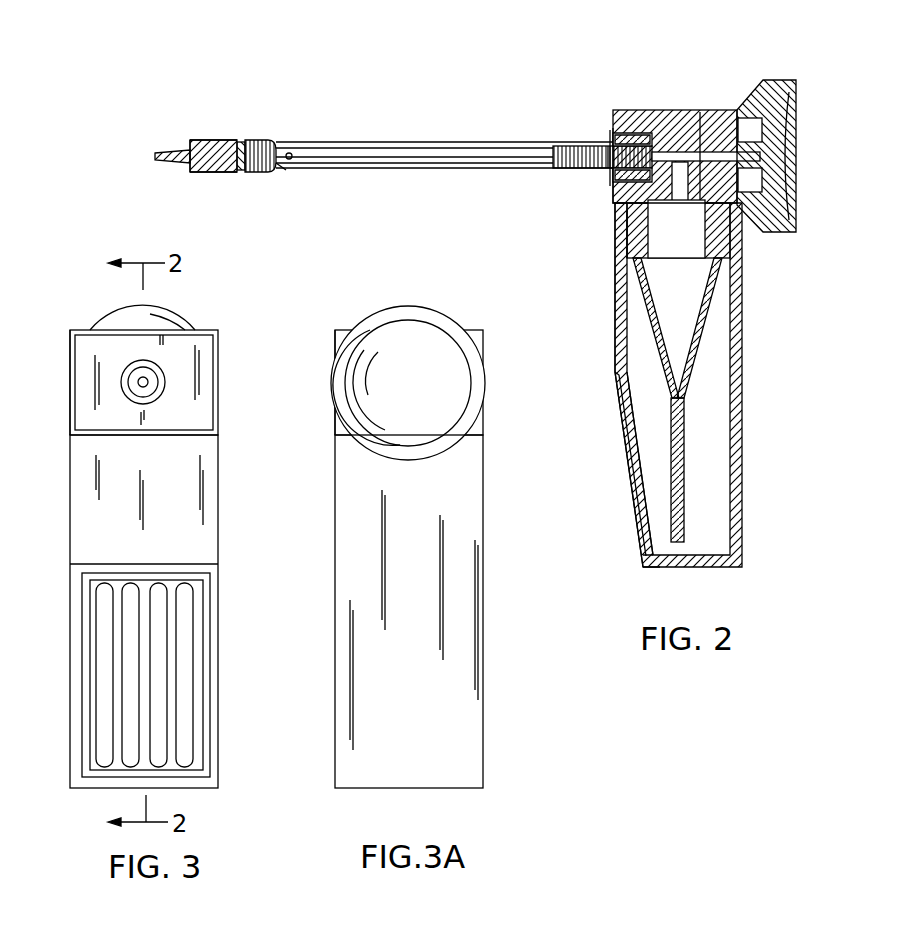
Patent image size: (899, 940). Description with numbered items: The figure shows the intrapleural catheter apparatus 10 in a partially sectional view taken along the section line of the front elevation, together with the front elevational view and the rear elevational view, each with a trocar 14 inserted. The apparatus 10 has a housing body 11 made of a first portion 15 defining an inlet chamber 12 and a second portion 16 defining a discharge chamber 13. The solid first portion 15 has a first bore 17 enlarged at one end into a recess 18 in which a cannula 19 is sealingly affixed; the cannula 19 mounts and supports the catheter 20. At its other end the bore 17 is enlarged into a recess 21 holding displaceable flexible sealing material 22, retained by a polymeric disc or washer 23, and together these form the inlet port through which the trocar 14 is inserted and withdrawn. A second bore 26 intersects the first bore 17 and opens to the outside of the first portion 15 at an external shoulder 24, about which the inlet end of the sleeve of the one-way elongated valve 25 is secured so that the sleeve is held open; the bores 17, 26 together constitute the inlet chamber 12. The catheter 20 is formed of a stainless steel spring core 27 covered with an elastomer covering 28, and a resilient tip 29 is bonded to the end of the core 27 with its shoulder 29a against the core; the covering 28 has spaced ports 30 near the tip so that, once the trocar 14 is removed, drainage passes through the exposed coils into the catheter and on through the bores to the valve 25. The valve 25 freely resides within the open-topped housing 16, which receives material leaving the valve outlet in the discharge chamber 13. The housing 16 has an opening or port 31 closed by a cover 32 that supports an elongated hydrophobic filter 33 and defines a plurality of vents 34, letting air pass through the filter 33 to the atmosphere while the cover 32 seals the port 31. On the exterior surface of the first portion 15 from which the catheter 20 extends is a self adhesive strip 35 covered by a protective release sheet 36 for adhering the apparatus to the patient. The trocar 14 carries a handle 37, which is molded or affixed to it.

In FIG. 2, the intrapleural catheter apparatus 10 is at (614, 288).
In FIG. 3, the intrapleural catheter apparatus 10 is at (218, 349).
In FIG. 3A, the intrapleural catheter apparatus 10 is at (342, 330).
In FIG. 2, the housing body 11 is at (616, 252).
In FIG. 2, the inlet chamber 12 is at (613, 205).
In FIG. 2, the discharge chamber 13 is at (716, 456).
In FIG. 2, the trocar 14 is at (165, 152).
In FIG. 3, the trocar 14 is at (143, 388).
In FIG. 2, the first portion of housing body 15 is at (658, 110).
In FIG. 3, the first portion of housing body 15 is at (218, 392).
In FIG. 3A, the first portion of housing body 15 is at (333, 357).
In FIG. 2, the second portion of housing body 16 is at (742, 330).
In FIG. 3, the second portion of housing body 16 is at (218, 512).
In FIG. 3A, the second portion of housing body 16 is at (335, 596).
In FIG. 2, the first bore 17 is at (681, 112).
In FIG. 2, the recess 18 is at (638, 110).
In FIG. 2, the cannula 19 is at (613, 140).
In FIG. 3, the cannula 19 is at (126, 372).
In FIG. 2, the catheter 20 is at (380, 142).
In FIG. 2, the recess 21 is at (710, 110).
In FIG. 2, the sealing material 22 is at (730, 110).
In FIG. 2, the disc or washer 23 is at (740, 110).
In FIG. 2, the external shoulder 24 is at (722, 290).
In FIG. 2, the one-way elongated valve 25 is at (705, 352).
In FIG. 2, the second bore 26 is at (683, 210).
In FIG. 2, the spring core 27 is at (258, 140).
In FIG. 2, the elastomer covering 28 is at (432, 142).
In FIG. 2, the tip 29 is at (222, 140).
In FIG. 3, the tip 29 is at (130, 382).
In FIG. 2, the shoulder of tip 29a is at (241, 140).
In FIG. 2, the ports 30 is at (292, 152).
In FIG. 2, the opening or port 31 is at (617, 358).
In FIG. 2, the cover 32 is at (624, 458).
In FIG. 3, the cover 32 is at (218, 640).
In FIG. 2, the hydrophobic filter 33 is at (650, 548).
In FIG. 3, the ports or vents 34 is at (98, 712).
In FIG. 2, the self adhesive strip 35 is at (614, 110).
In FIG. 2, the protective release sheet 36 is at (588, 130).
In FIG. 2, the handle 37 is at (792, 80).
In FIG. 3, the handle 37 is at (178, 313).
In FIG. 3A, the handle 37 is at (430, 310).